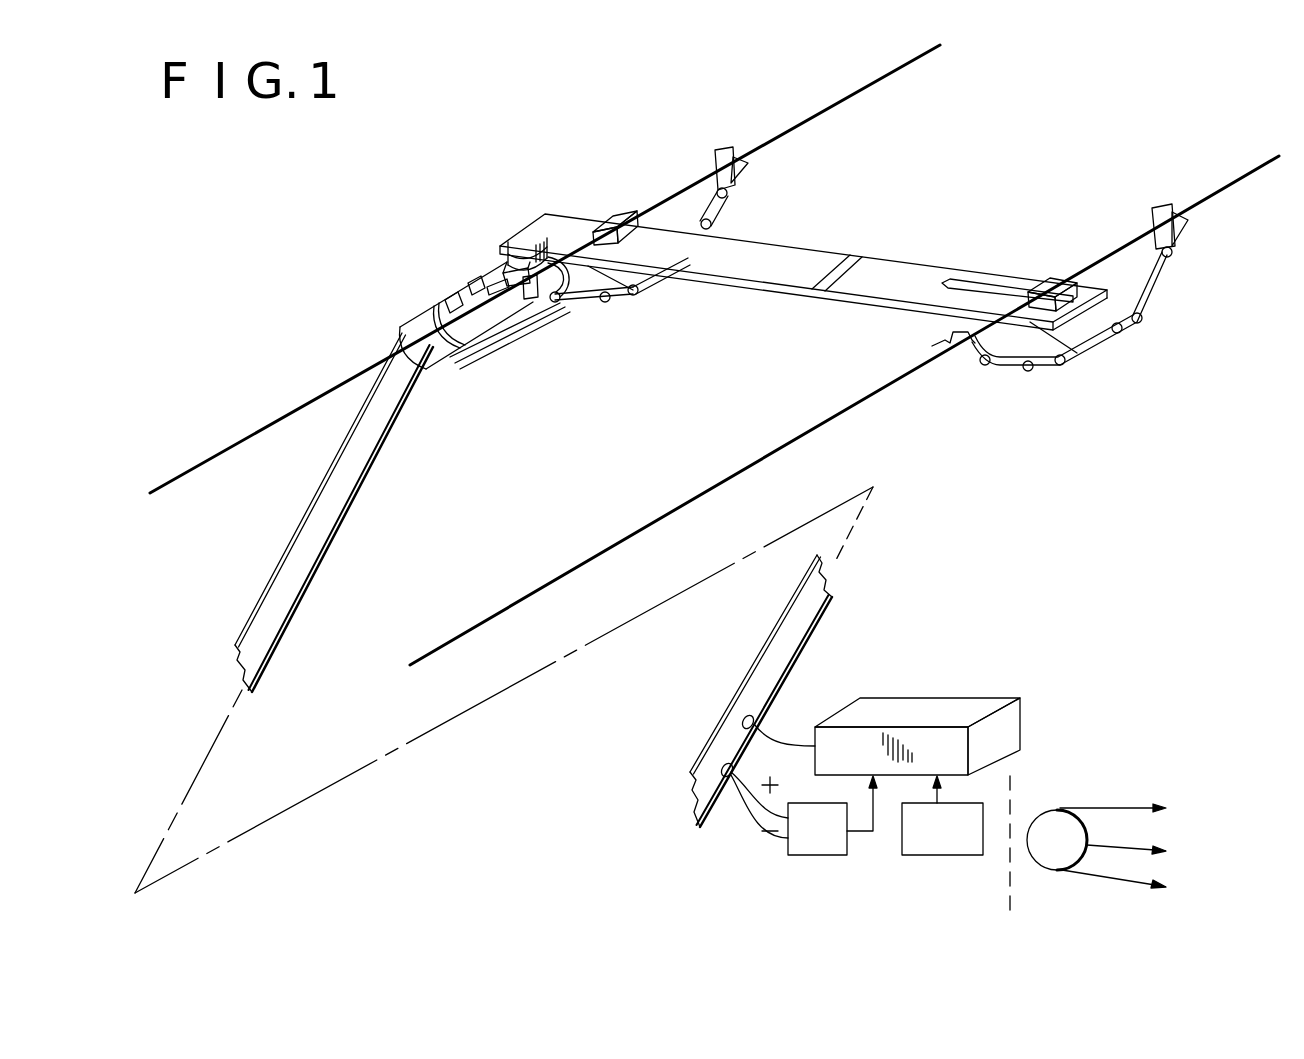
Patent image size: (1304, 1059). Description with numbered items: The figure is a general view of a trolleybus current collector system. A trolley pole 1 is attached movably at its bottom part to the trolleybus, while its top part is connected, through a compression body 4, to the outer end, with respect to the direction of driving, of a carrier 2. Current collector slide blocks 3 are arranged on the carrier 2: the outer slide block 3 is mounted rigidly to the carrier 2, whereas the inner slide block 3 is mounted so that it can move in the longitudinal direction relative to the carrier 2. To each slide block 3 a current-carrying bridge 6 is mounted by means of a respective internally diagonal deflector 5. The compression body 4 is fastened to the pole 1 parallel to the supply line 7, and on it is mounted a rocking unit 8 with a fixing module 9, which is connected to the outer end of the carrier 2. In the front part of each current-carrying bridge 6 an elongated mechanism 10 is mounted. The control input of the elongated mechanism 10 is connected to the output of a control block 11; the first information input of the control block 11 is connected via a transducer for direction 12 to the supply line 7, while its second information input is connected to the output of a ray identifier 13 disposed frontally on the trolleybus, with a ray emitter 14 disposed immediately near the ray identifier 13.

The trolley pole 1 is at (347, 448).
The carrier 2 is at (908, 286).
The current collector slide block 3 is at (617, 228).
The compression body 4 is at (484, 326).
The internally diagonal deflector 5 is at (638, 273).
The current-carrying bridge 6 is at (610, 300).
The supply line 7 is at (205, 458).
The rocking unit 8 is at (506, 268).
The fixing module 9 is at (527, 247).
The elongated mechanism 10 is at (528, 280).
The control block 11 is at (914, 708).
The transducer for direction 12 is at (826, 846).
The ray identifier 13 is at (943, 846).
The ray emitter 14 is at (1055, 823).